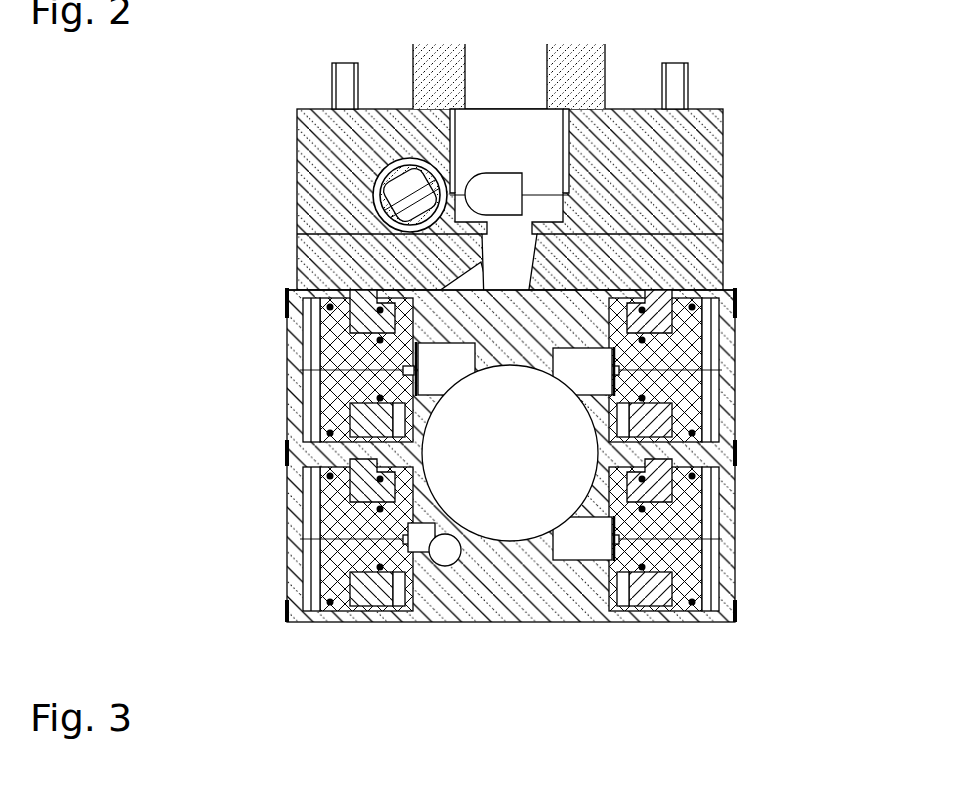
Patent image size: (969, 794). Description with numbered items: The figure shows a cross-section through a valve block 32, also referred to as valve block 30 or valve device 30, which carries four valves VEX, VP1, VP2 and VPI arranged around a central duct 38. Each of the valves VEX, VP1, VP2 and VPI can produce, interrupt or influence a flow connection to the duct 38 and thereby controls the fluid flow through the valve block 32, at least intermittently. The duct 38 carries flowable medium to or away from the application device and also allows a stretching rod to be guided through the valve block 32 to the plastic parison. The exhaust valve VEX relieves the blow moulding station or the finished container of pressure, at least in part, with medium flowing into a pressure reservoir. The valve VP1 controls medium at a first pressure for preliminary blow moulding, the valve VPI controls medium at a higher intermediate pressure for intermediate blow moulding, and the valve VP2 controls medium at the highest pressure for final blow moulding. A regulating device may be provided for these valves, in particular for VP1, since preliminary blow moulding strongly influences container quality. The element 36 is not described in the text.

The valve block 30 is at (492, 346).
The valve block 32 is at (511, 490).
The actuator connection 36 is at (503, 84).
The duct 38 is at (507, 513).
The exhaust valve VEX is at (333, 400).
The preliminary blow moulding valve VP1 is at (333, 553).
The third valve VP2 is at (670, 340).
The intermediate blow moulding valve VPI is at (677, 505).